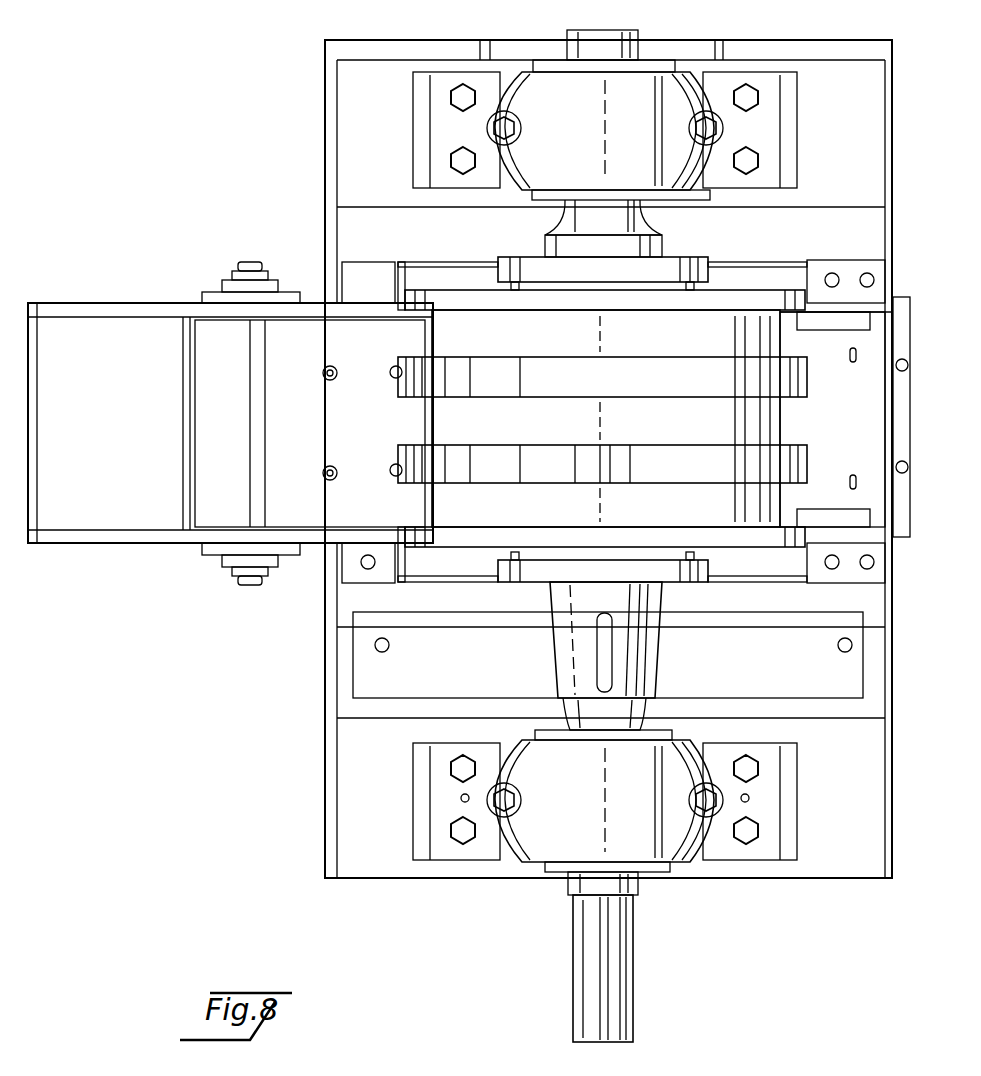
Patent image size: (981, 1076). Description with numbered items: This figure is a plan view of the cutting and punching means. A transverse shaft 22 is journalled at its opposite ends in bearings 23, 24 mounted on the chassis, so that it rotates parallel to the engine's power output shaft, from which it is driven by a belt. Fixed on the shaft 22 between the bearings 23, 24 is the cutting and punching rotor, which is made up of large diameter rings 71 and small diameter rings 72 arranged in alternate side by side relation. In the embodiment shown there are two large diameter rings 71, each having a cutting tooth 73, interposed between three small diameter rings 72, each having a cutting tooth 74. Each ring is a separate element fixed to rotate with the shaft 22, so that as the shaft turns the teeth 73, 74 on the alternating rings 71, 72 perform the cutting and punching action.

The transverse shaft 22 is at (655, 660).
The bearing 23 is at (698, 862).
The bearing 24 is at (668, 76).
The large diameter ring 71 is at (402, 398).
The small diameter ring 72 is at (768, 339).
The cutting tooth 73 is at (620, 458).
The cutting tooth 74 is at (735, 500).